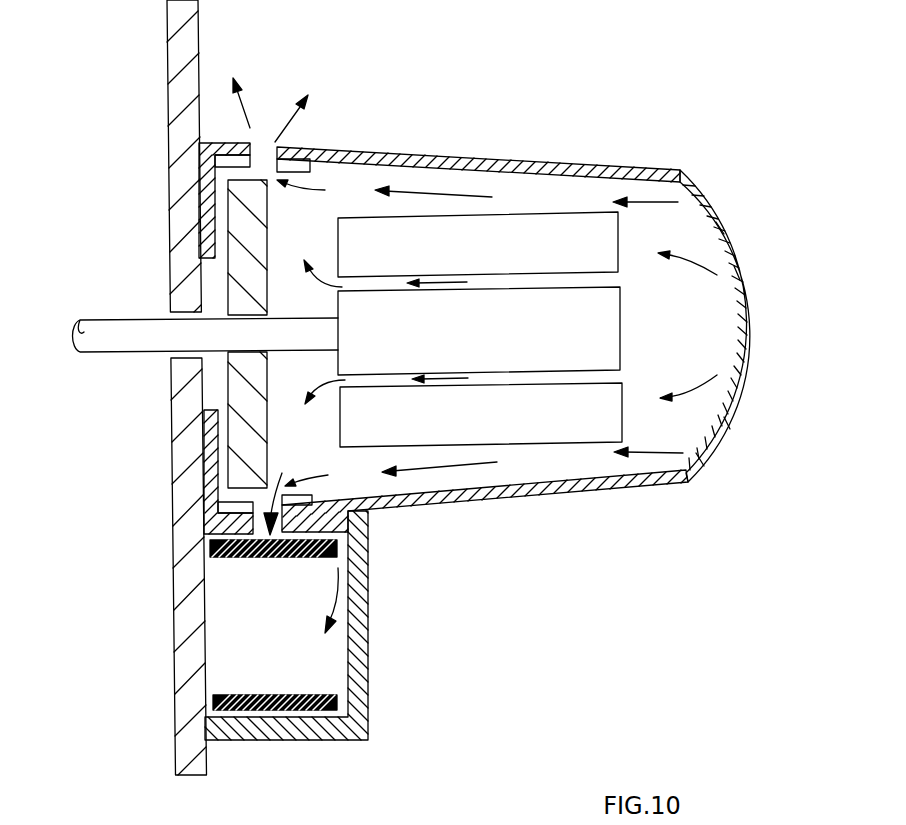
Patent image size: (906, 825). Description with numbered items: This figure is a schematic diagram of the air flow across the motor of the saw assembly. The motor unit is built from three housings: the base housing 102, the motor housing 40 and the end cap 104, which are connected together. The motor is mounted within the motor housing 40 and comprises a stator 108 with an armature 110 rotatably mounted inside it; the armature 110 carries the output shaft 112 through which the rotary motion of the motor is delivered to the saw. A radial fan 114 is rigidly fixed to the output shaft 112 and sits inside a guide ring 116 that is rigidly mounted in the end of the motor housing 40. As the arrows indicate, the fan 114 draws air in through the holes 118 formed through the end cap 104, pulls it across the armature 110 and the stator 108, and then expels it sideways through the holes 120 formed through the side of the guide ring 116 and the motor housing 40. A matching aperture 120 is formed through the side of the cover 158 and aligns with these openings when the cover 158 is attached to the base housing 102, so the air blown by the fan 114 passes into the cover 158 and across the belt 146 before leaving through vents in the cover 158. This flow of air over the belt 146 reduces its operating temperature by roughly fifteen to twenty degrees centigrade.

The motor housing 40 is at (438, 160).
The base housing 102 is at (178, 105).
The end cap 104 is at (745, 340).
The stator 108 is at (518, 417).
The armature 110 is at (527, 345).
The output shaft 112 is at (118, 340).
The radial fan 114 is at (245, 247).
The guide ring 116 is at (207, 177).
The holes 118 is at (737, 273).
The holes 120 is at (117, 525).
The belt 146 is at (280, 557).
The cover 158 is at (348, 655).